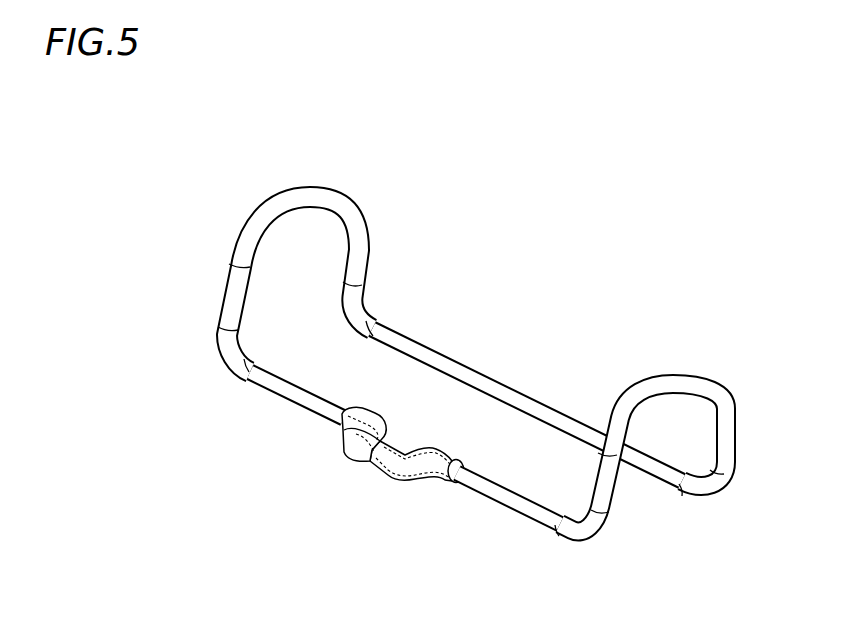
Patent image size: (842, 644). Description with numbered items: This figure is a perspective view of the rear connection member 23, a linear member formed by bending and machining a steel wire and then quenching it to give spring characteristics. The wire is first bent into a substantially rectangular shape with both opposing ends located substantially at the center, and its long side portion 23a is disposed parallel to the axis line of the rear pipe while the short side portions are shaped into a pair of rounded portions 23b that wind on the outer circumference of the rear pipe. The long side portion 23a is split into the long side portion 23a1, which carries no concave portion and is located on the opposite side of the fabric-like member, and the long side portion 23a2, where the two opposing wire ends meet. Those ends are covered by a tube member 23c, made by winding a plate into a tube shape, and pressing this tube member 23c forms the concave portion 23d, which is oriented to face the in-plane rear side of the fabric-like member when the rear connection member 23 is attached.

The rear connection member 23 is at (640, 229).
The long side portion 23a is at (527, 441).
The long side portion 23a1 is at (494, 381).
The long side portion 23a2 is at (500, 497).
The rounded portions 23b is at (306, 189).
The tube member 23c is at (410, 452).
The concave portion 23d is at (358, 457).